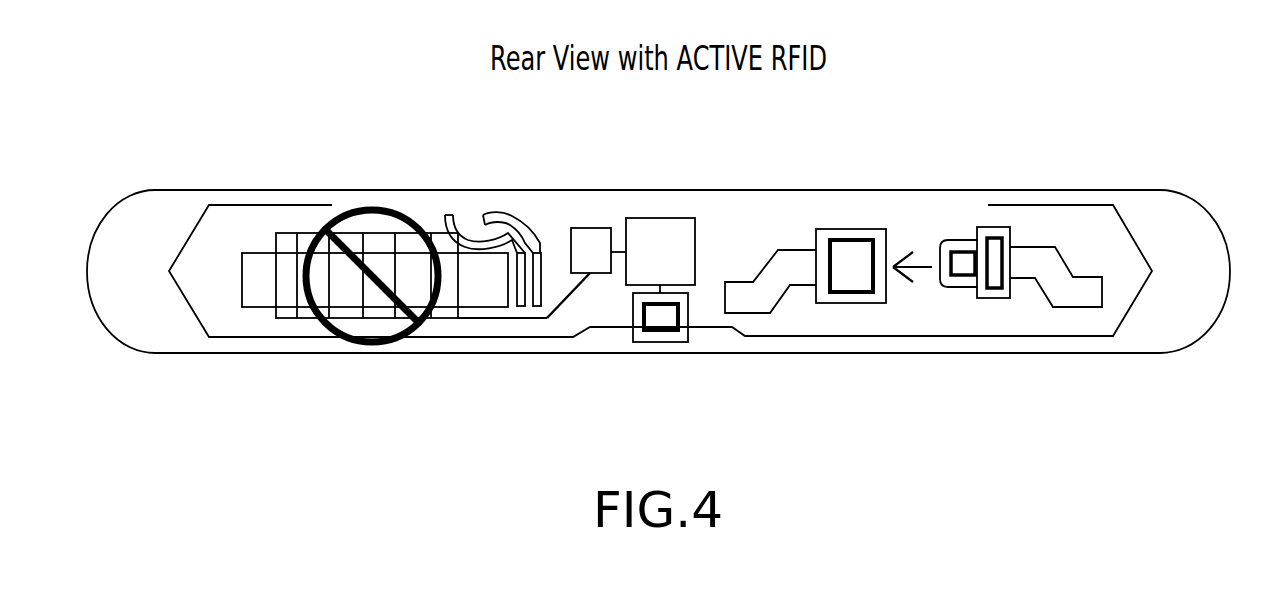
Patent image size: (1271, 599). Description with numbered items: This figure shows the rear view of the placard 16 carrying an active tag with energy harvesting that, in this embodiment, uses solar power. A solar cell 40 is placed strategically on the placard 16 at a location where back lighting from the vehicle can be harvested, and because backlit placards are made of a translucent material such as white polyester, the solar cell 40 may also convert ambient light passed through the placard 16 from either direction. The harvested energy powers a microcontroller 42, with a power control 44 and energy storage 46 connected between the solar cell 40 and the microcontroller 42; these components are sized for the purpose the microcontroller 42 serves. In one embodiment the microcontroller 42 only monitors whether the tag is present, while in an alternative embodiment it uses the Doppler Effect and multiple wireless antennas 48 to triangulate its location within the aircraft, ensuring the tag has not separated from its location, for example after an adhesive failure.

The placard 16 is at (995, 163).
The solar cell 40 is at (284, 314).
The microcontroller 42 is at (638, 334).
The power control 44 is at (603, 243).
The energy storage 46 is at (673, 252).
The wireless antennas 48 is at (933, 336).